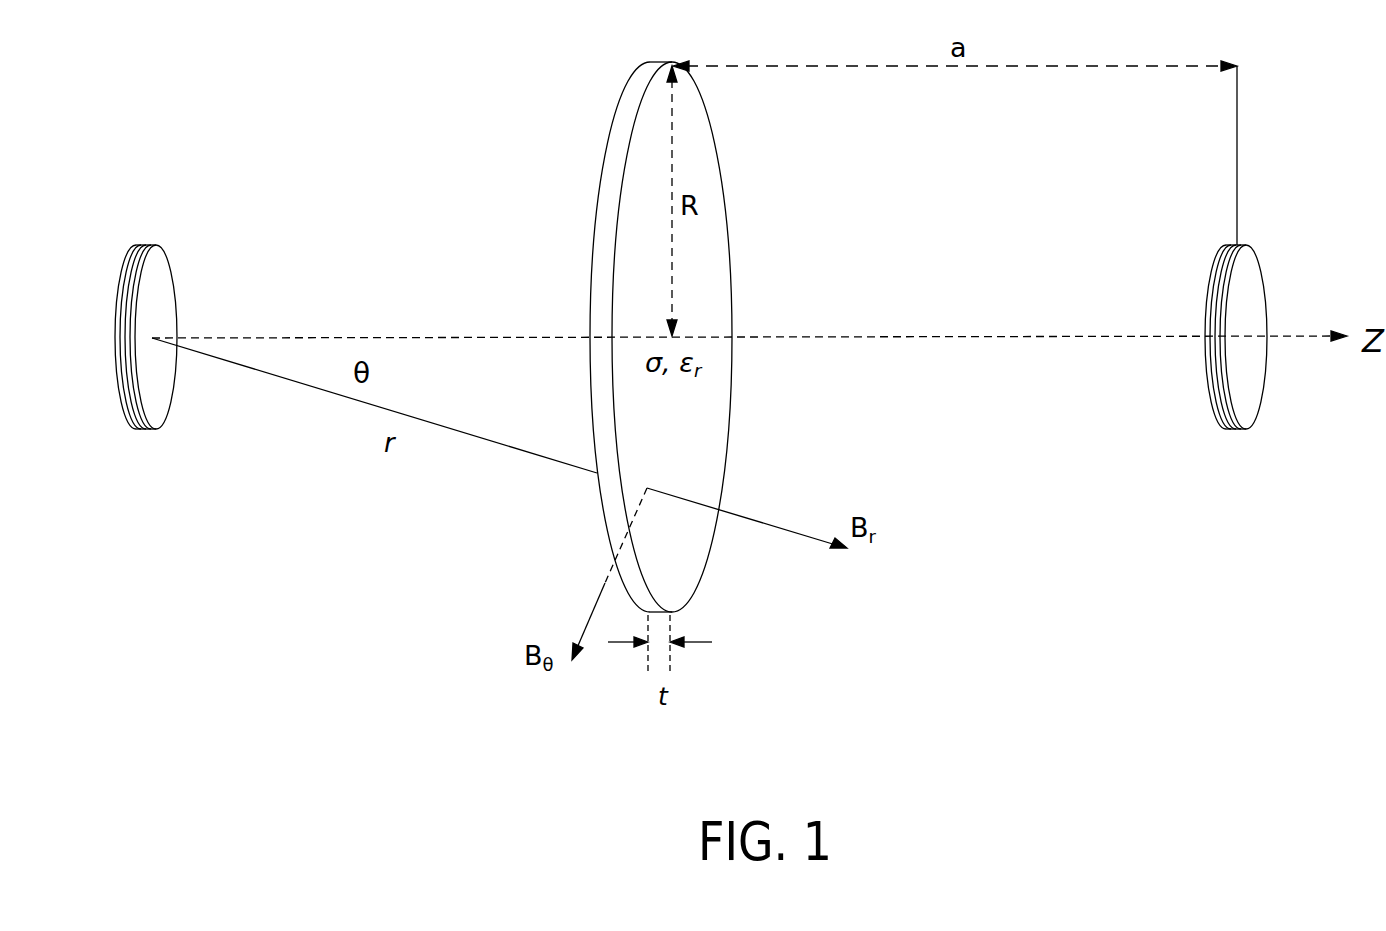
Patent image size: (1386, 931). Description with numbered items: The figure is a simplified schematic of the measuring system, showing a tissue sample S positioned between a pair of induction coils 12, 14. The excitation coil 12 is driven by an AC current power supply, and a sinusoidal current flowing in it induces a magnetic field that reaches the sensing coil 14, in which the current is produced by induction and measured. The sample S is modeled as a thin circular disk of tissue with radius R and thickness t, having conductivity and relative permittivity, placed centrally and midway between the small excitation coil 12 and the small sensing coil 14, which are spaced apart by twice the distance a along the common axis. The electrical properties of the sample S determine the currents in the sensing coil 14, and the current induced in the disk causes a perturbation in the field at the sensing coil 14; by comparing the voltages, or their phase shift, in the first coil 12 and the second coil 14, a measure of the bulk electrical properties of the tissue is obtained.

The excitation coil 12 is at (160, 290).
The sensing coil 14 is at (1253, 288).
The tissue sample S is at (600, 213).